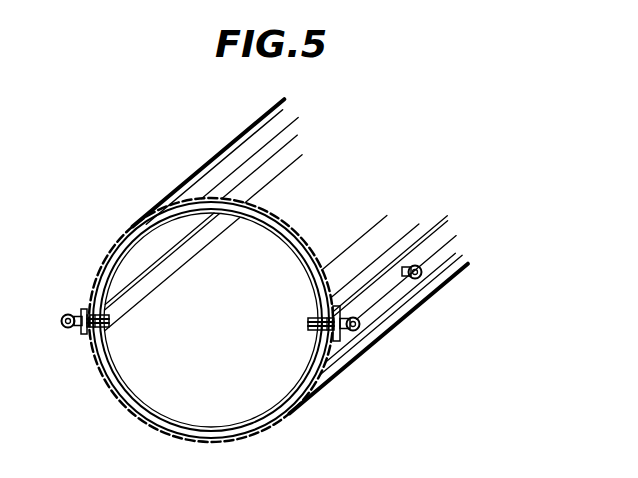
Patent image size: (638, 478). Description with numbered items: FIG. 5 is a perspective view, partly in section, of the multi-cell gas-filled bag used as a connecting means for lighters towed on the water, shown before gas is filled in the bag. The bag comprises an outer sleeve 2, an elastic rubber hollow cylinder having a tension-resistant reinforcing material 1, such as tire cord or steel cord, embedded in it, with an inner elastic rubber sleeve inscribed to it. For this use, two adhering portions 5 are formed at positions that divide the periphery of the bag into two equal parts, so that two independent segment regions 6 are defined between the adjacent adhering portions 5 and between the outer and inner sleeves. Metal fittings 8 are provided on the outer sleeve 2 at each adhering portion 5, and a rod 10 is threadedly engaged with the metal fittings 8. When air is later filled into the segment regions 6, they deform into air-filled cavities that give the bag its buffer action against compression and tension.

The tension-resistant reinforcing material 1 is at (263, 207).
The outer sleeve 2 is at (295, 238).
The adhering portions 5 is at (327, 338).
The segment regions 6 is at (297, 245).
The metal fittings 8 is at (70, 328).
The rod 10 is at (134, 306).